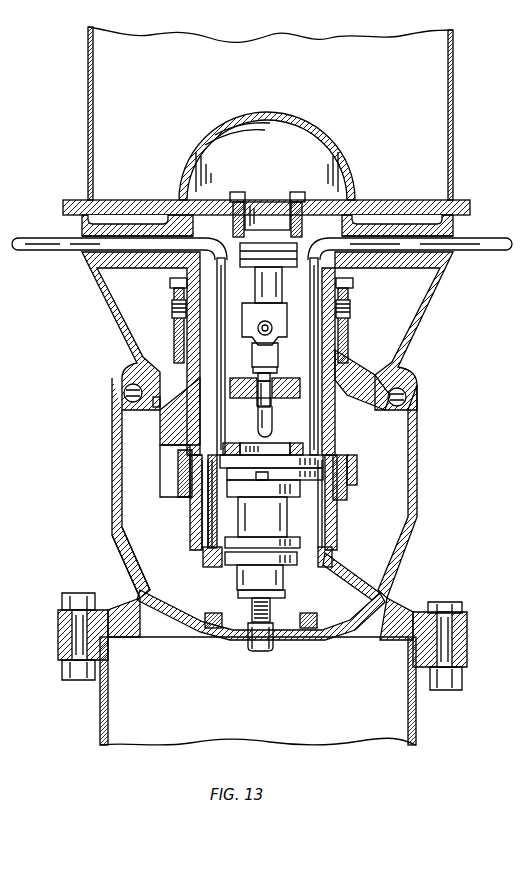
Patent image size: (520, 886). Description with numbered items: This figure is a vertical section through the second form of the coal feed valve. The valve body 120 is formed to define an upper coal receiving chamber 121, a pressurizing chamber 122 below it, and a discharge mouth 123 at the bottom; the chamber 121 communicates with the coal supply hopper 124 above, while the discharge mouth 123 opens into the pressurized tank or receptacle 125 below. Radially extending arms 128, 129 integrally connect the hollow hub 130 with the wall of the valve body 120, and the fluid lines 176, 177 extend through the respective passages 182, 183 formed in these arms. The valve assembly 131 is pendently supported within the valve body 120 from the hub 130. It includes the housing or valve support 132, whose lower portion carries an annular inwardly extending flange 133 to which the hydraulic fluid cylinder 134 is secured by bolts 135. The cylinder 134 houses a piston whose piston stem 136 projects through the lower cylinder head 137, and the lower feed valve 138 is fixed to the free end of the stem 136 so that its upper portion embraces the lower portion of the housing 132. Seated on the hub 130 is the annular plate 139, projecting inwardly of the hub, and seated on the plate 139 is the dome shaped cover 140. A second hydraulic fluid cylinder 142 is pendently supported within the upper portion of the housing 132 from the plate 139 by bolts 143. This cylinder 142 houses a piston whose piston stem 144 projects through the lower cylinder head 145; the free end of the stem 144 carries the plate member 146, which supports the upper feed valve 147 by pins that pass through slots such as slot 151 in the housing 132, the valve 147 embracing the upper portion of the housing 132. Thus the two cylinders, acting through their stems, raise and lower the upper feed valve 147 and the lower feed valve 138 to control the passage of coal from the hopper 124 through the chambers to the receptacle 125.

The valve body 120 is at (112, 482).
The coal receiving chamber 121 is at (398, 304).
The pressurizing chamber 122 is at (393, 514).
The discharge mouth 123 is at (392, 625).
The coal supply hopper 124 is at (280, 97).
The pressurized tank or receptacle 125 is at (413, 702).
The radially extending arm 128 is at (386, 222).
The radially extending arm 129 is at (119, 222).
The hollow hub 130 is at (166, 270).
The valve assembly 131 is at (360, 437).
The housing or valve support 132 is at (330, 438).
The annular inwardly extending flange 133 is at (233, 452).
The hydraulic fluid cylinder 134 is at (285, 578).
The bolts 135 is at (262, 482).
The piston stem 136 is at (278, 608).
The lower cylinder head 137 is at (238, 597).
The lower feed valve 138 is at (342, 565).
The annular plate 139 is at (318, 193).
The dome shaped cover 140 is at (324, 150).
The second hydraulic fluid cylinder 142 is at (249, 312).
The bolts 143 is at (298, 192).
The piston stem 144 is at (273, 386).
The lower cylinder head 145 is at (255, 392).
The plate member 146 is at (272, 399).
The upper feed valve 147 is at (152, 430).
The slot 151 is at (270, 418).
The fluid line 176 is at (486, 240).
The fluid line 177 is at (36, 240).
The passage 182 is at (420, 233).
The passage 183 is at (145, 217).